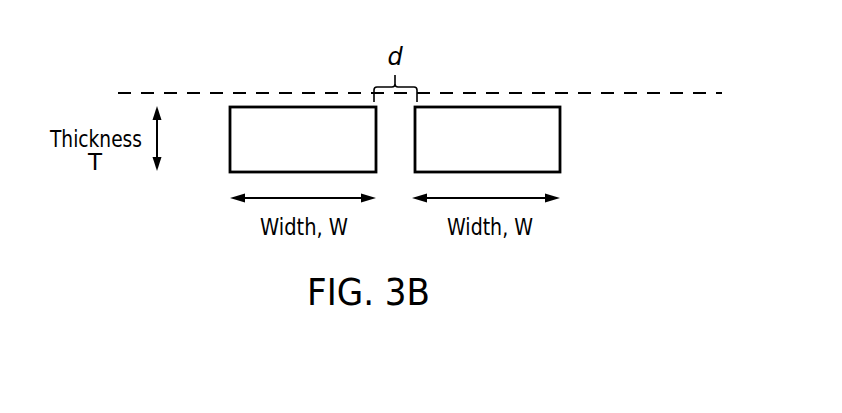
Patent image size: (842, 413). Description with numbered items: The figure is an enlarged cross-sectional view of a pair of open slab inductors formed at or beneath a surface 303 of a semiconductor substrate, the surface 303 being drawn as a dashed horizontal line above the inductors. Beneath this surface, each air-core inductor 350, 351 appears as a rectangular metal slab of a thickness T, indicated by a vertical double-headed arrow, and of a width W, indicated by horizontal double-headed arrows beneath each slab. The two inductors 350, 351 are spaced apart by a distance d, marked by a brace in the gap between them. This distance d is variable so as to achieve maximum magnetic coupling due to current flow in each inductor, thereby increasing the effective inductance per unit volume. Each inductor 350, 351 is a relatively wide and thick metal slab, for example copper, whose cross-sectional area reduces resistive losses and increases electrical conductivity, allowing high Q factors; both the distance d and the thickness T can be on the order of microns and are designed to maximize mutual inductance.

The surface of the semiconductor substrate 303 is at (238, 93).
The air-core inductor 350 is at (282, 152).
The air-core inductor 351 is at (470, 152).